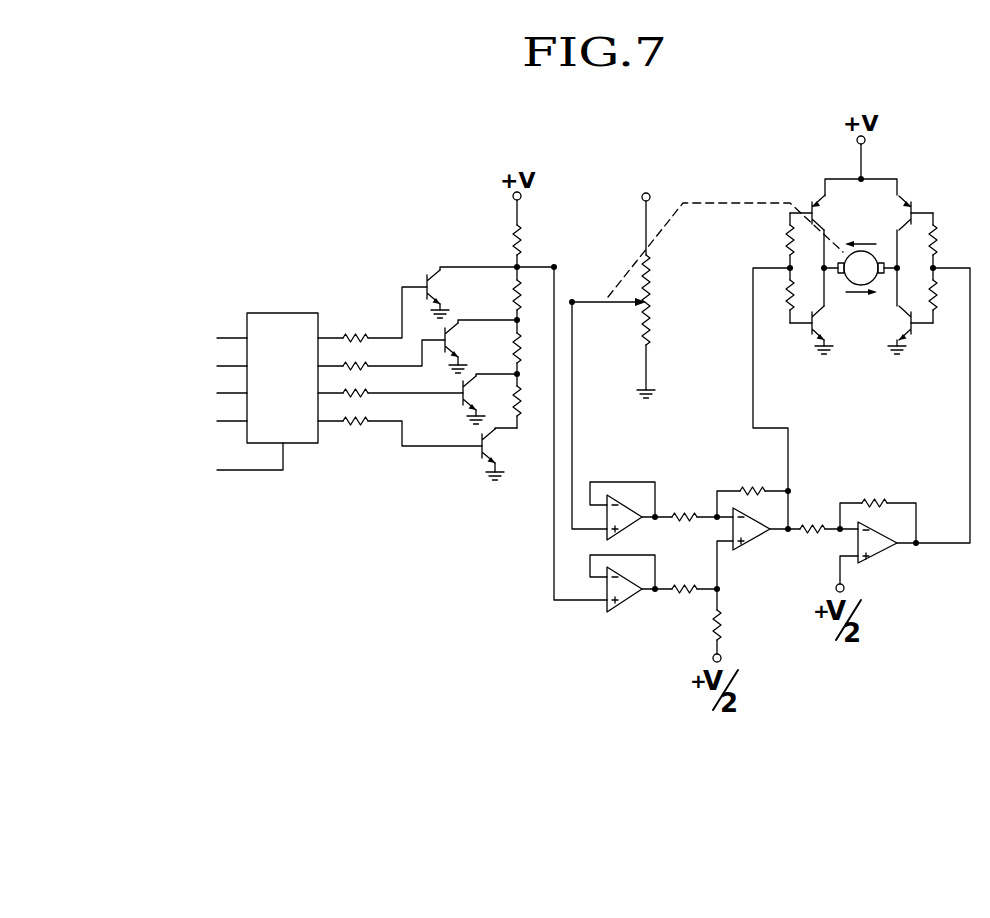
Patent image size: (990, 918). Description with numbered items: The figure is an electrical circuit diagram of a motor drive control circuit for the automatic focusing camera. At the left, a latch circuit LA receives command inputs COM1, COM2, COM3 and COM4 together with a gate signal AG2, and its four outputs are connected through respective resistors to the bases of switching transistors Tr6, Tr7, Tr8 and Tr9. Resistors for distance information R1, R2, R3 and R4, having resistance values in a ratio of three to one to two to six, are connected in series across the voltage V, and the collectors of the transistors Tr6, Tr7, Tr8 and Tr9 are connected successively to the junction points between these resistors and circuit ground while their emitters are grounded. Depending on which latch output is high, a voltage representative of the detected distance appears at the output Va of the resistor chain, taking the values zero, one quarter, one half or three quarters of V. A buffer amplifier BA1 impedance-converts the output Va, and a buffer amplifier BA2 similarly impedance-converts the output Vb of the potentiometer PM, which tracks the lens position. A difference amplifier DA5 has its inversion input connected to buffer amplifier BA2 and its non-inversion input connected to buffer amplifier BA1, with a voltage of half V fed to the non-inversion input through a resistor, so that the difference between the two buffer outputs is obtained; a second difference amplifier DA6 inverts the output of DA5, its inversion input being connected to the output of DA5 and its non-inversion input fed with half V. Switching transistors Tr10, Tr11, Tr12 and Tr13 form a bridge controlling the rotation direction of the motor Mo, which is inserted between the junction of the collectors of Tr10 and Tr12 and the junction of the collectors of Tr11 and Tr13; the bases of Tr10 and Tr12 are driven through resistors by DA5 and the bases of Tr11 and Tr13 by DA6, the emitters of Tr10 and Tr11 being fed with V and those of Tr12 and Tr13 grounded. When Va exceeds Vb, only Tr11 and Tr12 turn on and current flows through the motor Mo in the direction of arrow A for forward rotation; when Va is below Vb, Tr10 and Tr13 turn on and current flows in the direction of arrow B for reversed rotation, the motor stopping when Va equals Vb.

The latch circuit LA is at (280, 313).
The command input 1 COM1 is at (201, 338).
The command input 2 COM2 is at (201, 366).
The command input 3 COM3 is at (201, 393).
The command input 4 COM4 is at (201, 421).
The gate signal input AG2 is at (220, 463).
The switching transistor Tr6 is at (472, 292).
The switching transistor Tr7 is at (481, 346).
The switching transistor Tr8 is at (490, 399).
The switching transistor Tr9 is at (506, 454).
The resistor for distance information R1 is at (530, 241).
The resistor for distance information R2 is at (530, 295).
The resistor for distance information R3 is at (530, 349).
The resistor for distance information R4 is at (530, 402).
The output of the series resistor circuit Va is at (554, 266).
The output of the potentiometer Vb is at (572, 302).
The potentiometer PM is at (650, 300).
The switching transistor Tr10 is at (814, 216).
The switching transistor Tr11 is at (902, 216).
The switching transistor Tr12 is at (821, 311).
The switching transistor Tr13 is at (902, 335).
The motor Mo is at (860, 268).
The arrow A is at (860, 232).
The arrow B is at (861, 304).
The buffer amplifier BA1 is at (628, 596).
The buffer amplifier BA2 is at (640, 523).
The difference amplifier DA5 is at (757, 537).
The difference amplifier DA6 is at (885, 551).